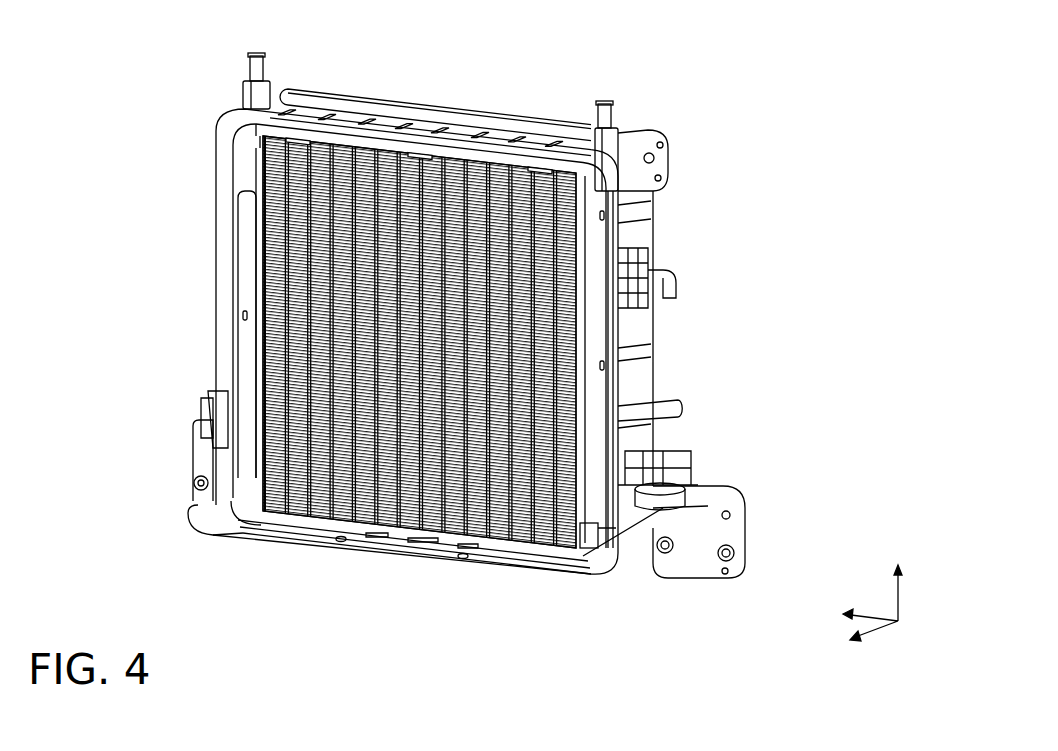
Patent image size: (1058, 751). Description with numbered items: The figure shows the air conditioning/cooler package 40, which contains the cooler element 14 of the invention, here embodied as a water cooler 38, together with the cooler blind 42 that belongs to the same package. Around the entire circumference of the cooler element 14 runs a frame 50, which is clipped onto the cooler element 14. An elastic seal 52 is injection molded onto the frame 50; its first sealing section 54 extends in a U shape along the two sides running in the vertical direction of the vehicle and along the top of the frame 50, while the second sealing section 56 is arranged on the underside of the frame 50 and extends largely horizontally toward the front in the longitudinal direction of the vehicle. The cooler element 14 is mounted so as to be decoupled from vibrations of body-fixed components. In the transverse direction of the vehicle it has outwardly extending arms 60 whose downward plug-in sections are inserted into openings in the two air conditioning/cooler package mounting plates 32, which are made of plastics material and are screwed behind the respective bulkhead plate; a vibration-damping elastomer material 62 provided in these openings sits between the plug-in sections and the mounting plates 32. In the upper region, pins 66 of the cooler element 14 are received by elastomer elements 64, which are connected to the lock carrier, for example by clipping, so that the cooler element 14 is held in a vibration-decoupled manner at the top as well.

The air conditioning/cooler package 40 is at (708, 113).
The elastic seal 52 is at (215, 188).
The cooler element 14 is at (347, 342).
The water cooler 38 is at (270, 250).
The frame 50 is at (236, 358).
The cooler blind 42 is at (455, 110).
The first sealing section 54 is at (372, 120).
The elastomer elements 64 is at (237, 77).
The pins 66 is at (246, 62).
The arms 60 is at (674, 457).
The vibration-damping elastomer material 62 is at (645, 480).
The air conditioning/cooler package mounting plate 32 is at (197, 450).
The second sealing section 56 is at (428, 545).